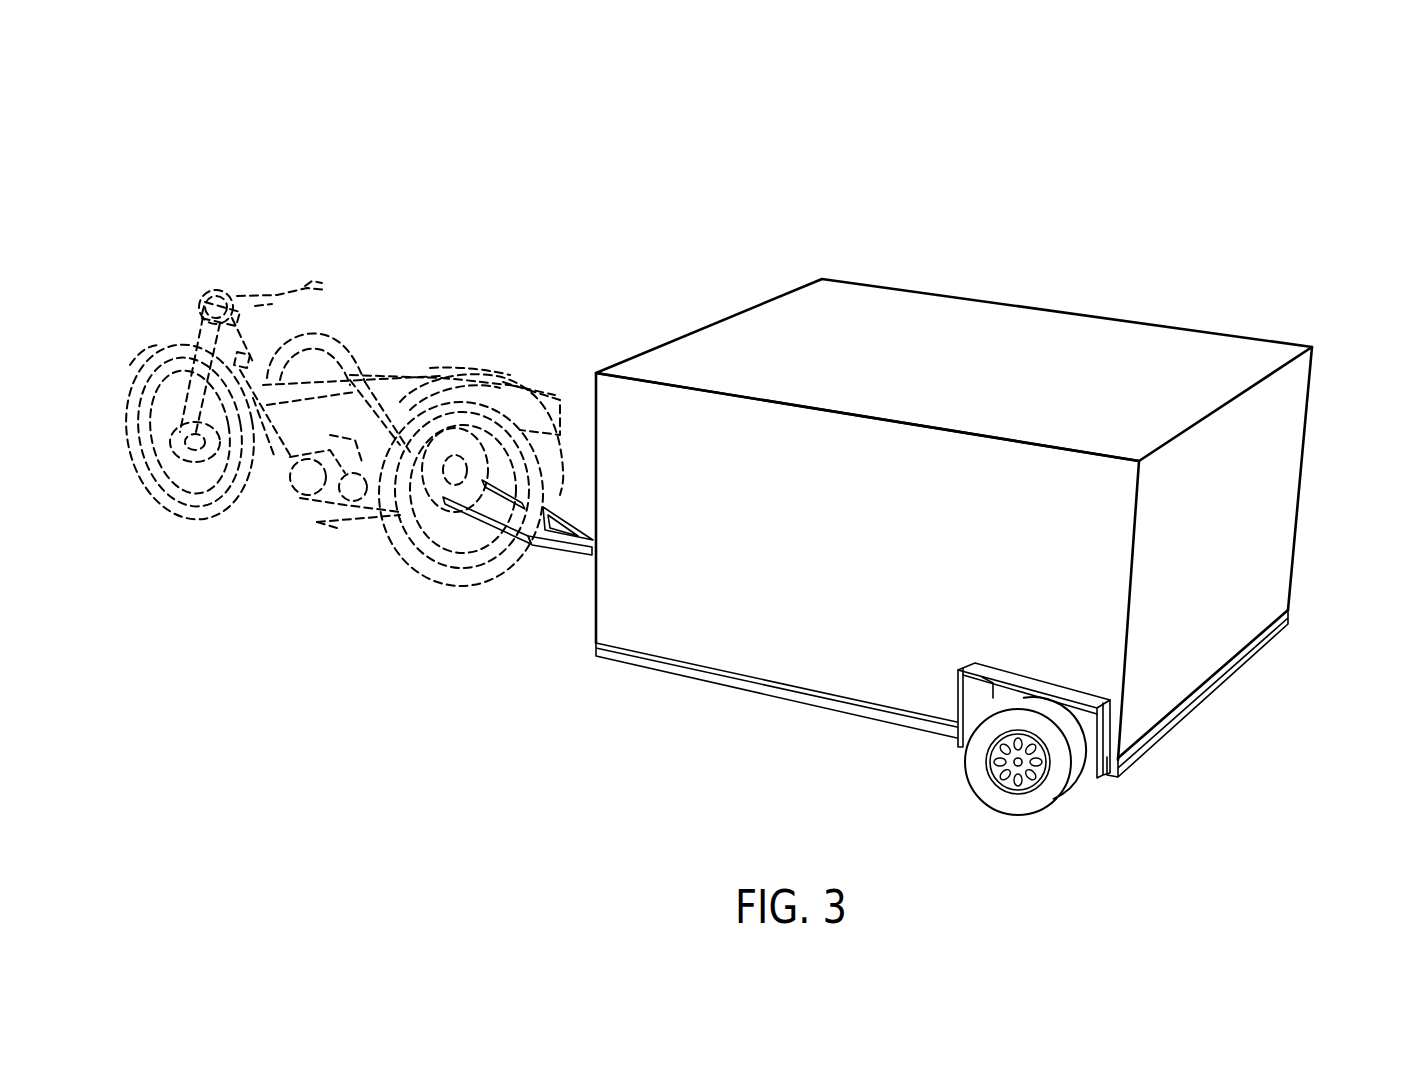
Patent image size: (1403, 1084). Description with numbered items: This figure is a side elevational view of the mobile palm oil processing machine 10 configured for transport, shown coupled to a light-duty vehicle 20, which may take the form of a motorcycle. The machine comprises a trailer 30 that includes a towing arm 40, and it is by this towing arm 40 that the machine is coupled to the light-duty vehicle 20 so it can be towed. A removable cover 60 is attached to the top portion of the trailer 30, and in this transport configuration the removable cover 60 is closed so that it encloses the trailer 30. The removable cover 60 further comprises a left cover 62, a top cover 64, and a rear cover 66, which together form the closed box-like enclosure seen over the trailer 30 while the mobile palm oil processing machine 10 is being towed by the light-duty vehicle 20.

The mobile palm oil processing machine 10 is at (1048, 103).
The light-duty vehicle 20 is at (330, 333).
The trailer 30 is at (777, 692).
The towing arm 40 is at (517, 557).
The removable cover 60 is at (995, 300).
The left cover 62 is at (766, 580).
The top cover 64 is at (1085, 375).
The rear cover 66 is at (1243, 502).